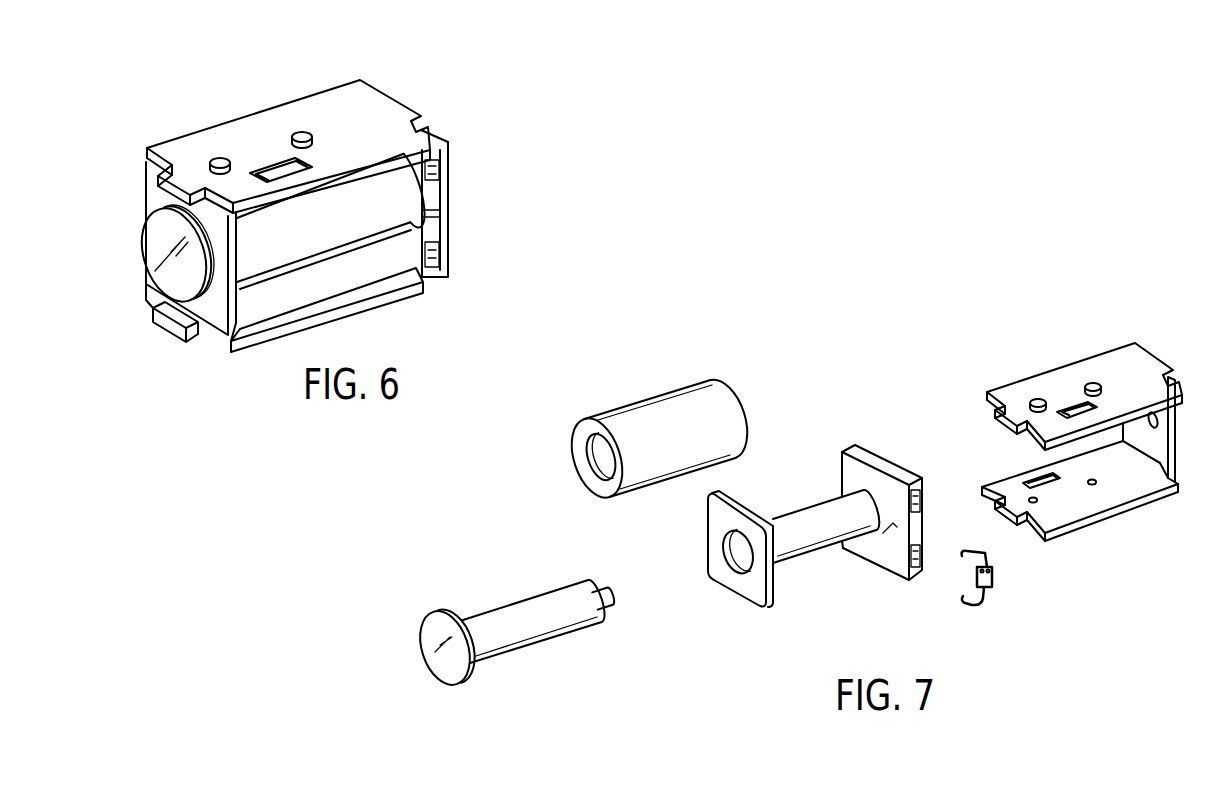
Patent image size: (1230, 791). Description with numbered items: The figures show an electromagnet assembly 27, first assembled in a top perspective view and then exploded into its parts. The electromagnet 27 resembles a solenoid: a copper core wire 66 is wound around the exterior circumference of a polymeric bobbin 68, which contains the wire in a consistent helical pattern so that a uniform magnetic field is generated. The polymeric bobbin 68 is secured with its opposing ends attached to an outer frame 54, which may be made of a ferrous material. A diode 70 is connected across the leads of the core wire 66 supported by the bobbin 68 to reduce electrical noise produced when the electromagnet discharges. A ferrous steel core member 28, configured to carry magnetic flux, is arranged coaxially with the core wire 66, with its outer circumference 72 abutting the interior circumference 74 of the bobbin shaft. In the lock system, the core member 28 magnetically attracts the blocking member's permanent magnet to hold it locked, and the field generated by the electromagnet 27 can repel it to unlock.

In FIG. 6, the electromagnet assembly 27 is at (188, 80).
In FIG. 7, the electromagnet assembly 27 is at (950, 292).
In FIG. 6, the outer frame 54 is at (267, 123).
In FIG. 7, the outer frame 54 is at (1112, 368).
In FIG. 6, the core wire 66 is at (340, 207).
In FIG. 7, the core wire 66 is at (672, 417).
In FIG. 6, the core member 28 is at (153, 243).
In FIG. 7, the core member 28 is at (445, 663).
In FIG. 6, the polymeric bobbin 68 is at (216, 306).
In FIG. 7, the polymeric bobbin 68 is at (803, 490).
In FIG. 7, the diode 70 is at (993, 577).
In FIG. 7, the outer circumference 72 is at (555, 600).
In FIG. 7, the interior circumference 74 is at (737, 557).